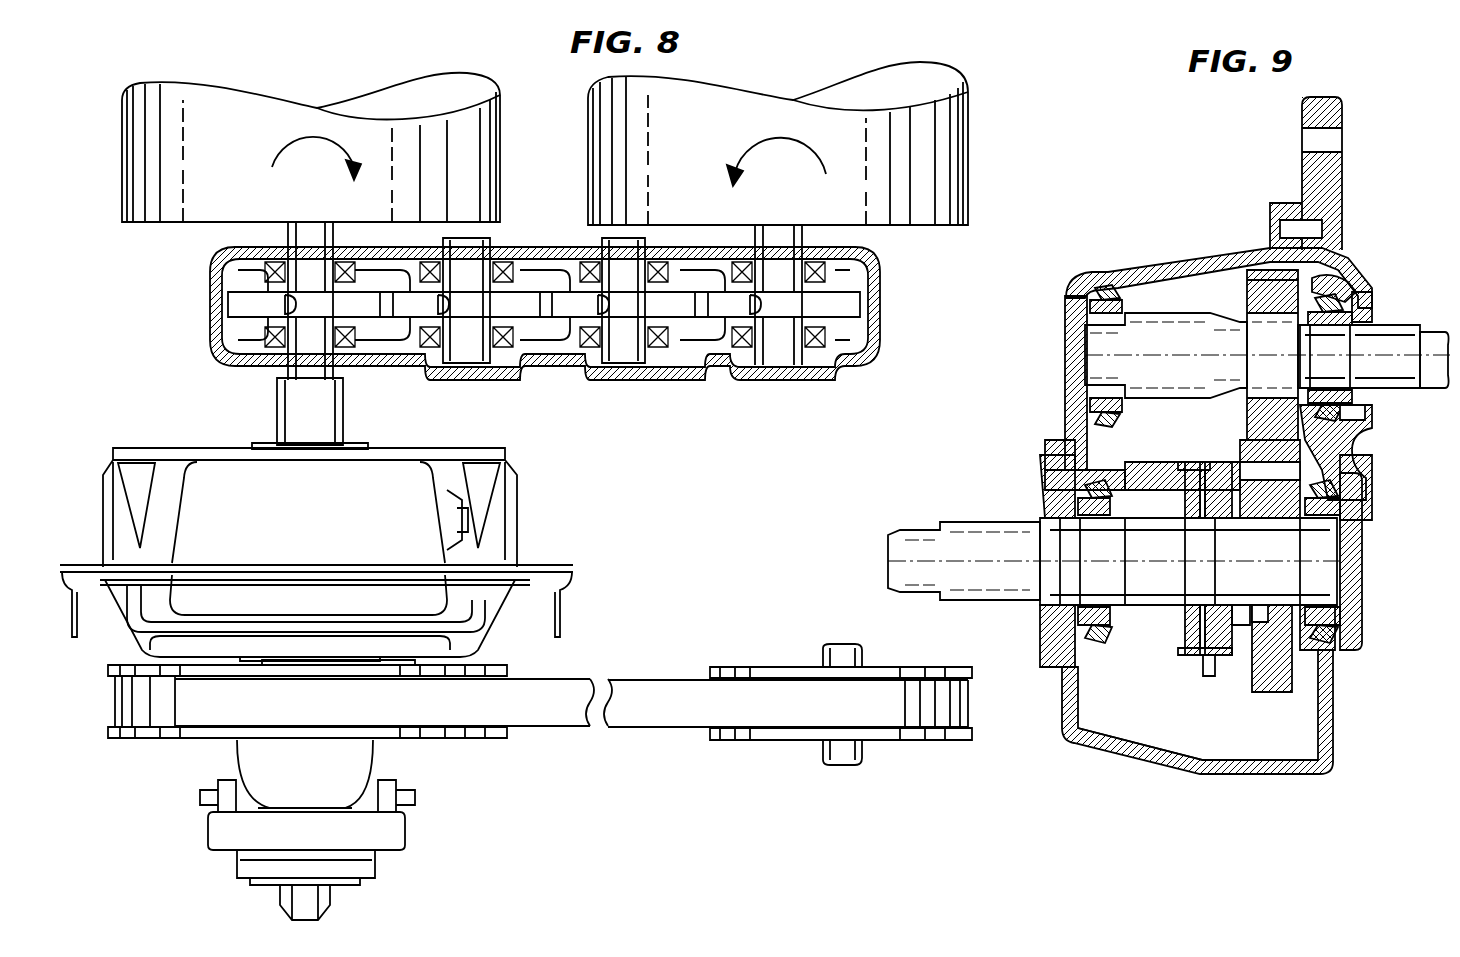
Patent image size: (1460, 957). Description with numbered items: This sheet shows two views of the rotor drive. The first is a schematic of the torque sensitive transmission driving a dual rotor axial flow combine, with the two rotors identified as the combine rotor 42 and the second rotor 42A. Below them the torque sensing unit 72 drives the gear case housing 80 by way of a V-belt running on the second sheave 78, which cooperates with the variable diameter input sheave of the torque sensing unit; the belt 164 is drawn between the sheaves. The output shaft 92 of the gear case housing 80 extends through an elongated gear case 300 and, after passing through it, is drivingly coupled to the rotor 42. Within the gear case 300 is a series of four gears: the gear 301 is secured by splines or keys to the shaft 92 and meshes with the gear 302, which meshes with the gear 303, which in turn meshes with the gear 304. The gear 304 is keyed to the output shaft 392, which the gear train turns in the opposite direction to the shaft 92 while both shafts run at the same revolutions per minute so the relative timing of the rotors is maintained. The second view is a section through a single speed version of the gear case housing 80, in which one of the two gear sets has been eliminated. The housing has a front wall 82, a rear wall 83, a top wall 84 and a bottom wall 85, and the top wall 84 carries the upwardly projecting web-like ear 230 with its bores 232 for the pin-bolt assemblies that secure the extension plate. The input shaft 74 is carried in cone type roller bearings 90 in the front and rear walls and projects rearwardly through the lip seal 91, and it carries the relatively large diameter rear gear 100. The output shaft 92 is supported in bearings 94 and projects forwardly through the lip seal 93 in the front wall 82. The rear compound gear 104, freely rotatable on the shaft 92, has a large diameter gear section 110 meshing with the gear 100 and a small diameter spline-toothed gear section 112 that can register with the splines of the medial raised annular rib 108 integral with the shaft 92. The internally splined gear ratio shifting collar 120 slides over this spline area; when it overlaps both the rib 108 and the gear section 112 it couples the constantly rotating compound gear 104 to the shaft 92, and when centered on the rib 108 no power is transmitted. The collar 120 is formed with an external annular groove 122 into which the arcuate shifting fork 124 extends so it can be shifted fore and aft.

In FIG. 8, the combine rotor 42 is at (122, 180).
In FIG. 8, the second rotor 42A is at (968, 200).
In FIG. 8, the elongated gear case 300 is at (882, 290).
In FIG. 8, the gear 301 is at (212, 285).
In FIG. 8, the gear 302 is at (528, 318).
In FIG. 8, the gear 303 is at (688, 318).
In FIG. 8, the gear 304 is at (848, 320).
In FIG. 8, the output shaft 392 is at (778, 350).
In FIG. 8, the output shaft 92 is at (345, 442).
In FIG. 9, the output shaft 92 is at (1000, 540).
In FIG. 8, the gear case housing 80 is at (172, 538).
In FIG. 9, the gear case housing 80 is at (1055, 328).
In FIG. 8, the drive belt 164 is at (548, 740).
In FIG. 8, the second sheave 78 is at (735, 665).
In FIG. 8, the torque sensing unit 72 is at (405, 828).
In FIG. 9, the web-like ear 230 is at (1343, 158).
In FIG. 9, the bores 232 is at (1342, 218).
In FIG. 9, the rear gear 100 is at (1330, 246).
In FIG. 9, the top wall 84 is at (1198, 255).
In FIG. 9, the roller bearings 90 is at (1085, 272).
In FIG. 9, the front wall 82 is at (1068, 383).
In FIG. 9, the input shaft 74 is at (1438, 335).
In FIG. 9, the lip seal 91 is at (1365, 412).
In FIG. 9, the bearings 94 is at (1052, 458).
In FIG. 9, the lip seal 93 is at (1058, 605).
In FIG. 9, the rear wall 83 is at (1363, 545).
In FIG. 9, the splined rib 108 is at (1220, 570).
In FIG. 9, the gear ratio shifting collar 120 is at (1228, 470).
In FIG. 9, the annular groove 122 is at (1200, 480).
In FIG. 9, the shifting fork 124 is at (1208, 676).
In FIG. 9, the small diameter gear section 112 is at (1212, 662).
In FIG. 9, the rear compound gear 104 is at (1283, 668).
In FIG. 9, the large diameter gear section 110 is at (1266, 665).
In FIG. 9, the bottom wall 85 is at (1185, 768).